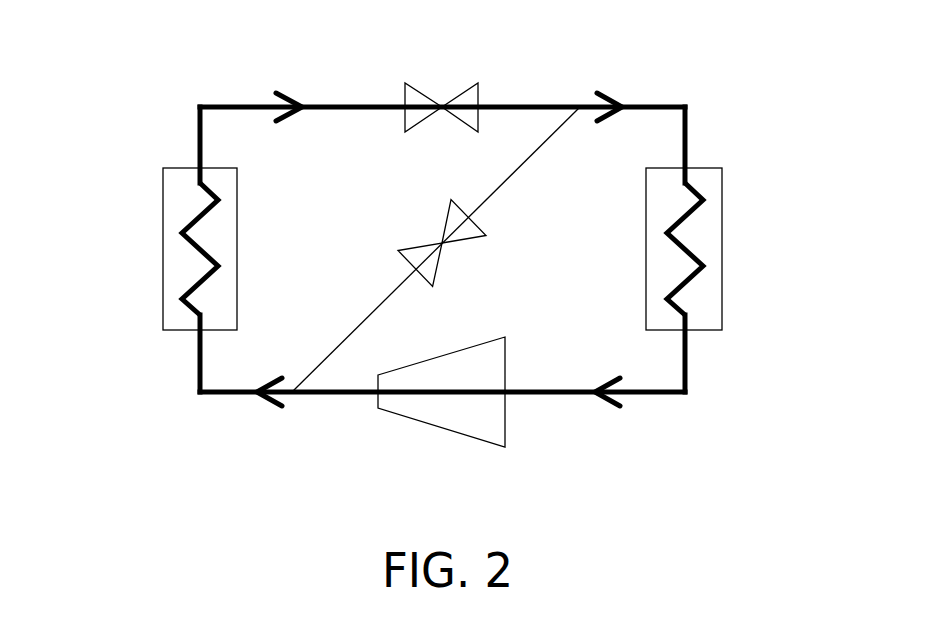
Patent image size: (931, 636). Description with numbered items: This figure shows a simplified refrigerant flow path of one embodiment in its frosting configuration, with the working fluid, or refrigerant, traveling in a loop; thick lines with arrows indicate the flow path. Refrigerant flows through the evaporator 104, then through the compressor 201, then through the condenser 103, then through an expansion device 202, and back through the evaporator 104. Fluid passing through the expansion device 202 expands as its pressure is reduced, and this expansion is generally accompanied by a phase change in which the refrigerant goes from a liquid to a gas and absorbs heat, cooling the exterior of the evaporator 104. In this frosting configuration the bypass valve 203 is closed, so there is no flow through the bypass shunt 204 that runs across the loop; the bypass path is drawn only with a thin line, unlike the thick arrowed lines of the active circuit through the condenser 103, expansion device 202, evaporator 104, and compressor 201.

The condenser 103 is at (163, 191).
The evaporator 104 is at (722, 242).
The compressor 201 is at (417, 423).
The expansion device 202 is at (458, 93).
The bypass valve 203 is at (435, 267).
The bypass shunt 204 is at (538, 152).